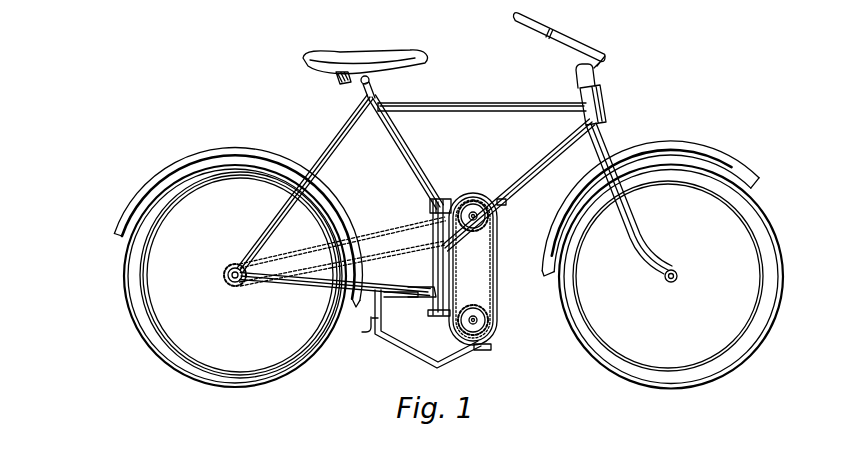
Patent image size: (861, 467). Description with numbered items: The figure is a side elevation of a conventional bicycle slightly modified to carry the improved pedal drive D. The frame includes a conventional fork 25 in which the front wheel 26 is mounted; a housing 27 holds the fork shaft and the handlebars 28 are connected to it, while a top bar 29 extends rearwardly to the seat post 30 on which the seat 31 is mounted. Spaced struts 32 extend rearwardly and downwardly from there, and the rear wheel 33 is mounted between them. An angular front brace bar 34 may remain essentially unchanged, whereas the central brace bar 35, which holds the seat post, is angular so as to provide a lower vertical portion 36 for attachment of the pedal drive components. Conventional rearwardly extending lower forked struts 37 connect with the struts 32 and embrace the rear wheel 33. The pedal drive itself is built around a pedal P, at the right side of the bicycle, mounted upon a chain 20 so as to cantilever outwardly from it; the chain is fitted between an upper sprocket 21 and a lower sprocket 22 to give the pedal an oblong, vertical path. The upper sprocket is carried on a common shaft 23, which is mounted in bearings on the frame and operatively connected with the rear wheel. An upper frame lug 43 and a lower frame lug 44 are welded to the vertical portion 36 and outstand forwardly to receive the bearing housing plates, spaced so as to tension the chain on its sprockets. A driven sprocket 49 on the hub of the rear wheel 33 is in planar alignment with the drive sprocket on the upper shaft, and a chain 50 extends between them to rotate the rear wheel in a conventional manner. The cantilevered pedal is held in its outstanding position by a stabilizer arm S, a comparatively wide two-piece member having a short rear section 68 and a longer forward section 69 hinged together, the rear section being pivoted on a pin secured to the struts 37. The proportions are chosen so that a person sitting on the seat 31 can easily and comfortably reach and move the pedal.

The chain 20 is at (498, 283).
The upper sprocket 21 is at (466, 204).
The lower sprocket 22 is at (486, 320).
The common shaft 23 is at (478, 217).
The fork 25 is at (637, 228).
The front wheel 26 is at (772, 222).
The housing 27 is at (605, 106).
The handlebars 28 is at (582, 46).
The top bar 29 is at (481, 106).
The seat post 30 is at (366, 92).
The seat 31 is at (335, 58).
The struts 32 is at (341, 144).
The rear wheel 33 is at (133, 303).
The angular front brace bar 34 is at (561, 151).
The central brace bar 35 is at (407, 150).
The lower vertical portion 36 is at (432, 256).
The lower forked struts 37 is at (312, 285).
The upper frame lug 43 is at (429, 204).
The lower frame lug 44 is at (442, 314).
The driven sprocket 49 is at (232, 285).
The chain 50 is at (321, 243).
The rear section 68 is at (362, 332).
The forward section 69 is at (402, 340).
The stabilizer arm S is at (402, 364).
The pedal P is at (481, 347).
The pedal drive D is at (481, 181).